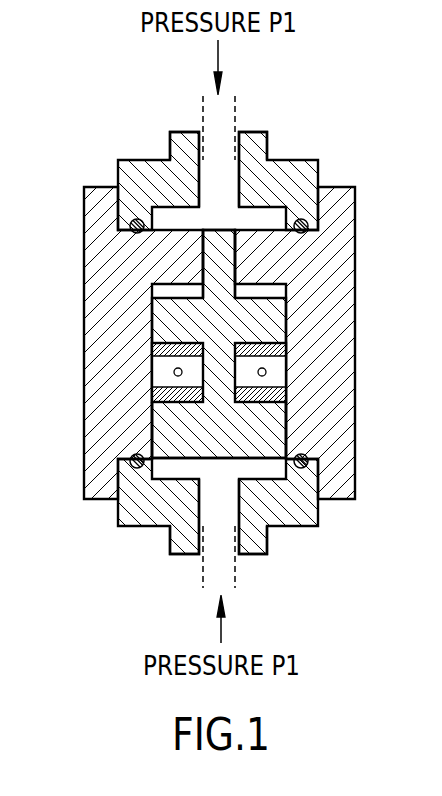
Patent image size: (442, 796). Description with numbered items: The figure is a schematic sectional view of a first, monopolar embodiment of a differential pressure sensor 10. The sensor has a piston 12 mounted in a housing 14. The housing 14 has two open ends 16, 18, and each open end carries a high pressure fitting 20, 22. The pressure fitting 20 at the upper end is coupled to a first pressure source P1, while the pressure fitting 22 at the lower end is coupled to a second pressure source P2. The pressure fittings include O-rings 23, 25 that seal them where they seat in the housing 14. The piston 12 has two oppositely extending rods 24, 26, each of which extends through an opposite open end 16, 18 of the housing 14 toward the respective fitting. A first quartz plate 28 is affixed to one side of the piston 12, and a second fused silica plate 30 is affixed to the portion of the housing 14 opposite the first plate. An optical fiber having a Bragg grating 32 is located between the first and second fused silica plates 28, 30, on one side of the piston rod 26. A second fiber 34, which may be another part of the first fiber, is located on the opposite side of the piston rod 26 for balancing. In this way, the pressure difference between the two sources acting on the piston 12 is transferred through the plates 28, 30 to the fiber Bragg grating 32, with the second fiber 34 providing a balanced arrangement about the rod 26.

The differential pressure sensor 10 is at (221, 398).
The piston 12 is at (221, 398).
The housing 14 is at (347, 320).
The open end 16 is at (221, 398).
The open end 18 is at (221, 398).
The high pressure fitting 20 is at (268, 165).
The high pressure fitting 22 is at (272, 522).
The O-ring 23 is at (306, 468).
The piston rod 24 is at (237, 254).
The O-ring 25 is at (307, 222).
The piston rod 26 is at (205, 435).
The first quartz plate 28 is at (155, 348).
The second fused silica plate 30 is at (152, 393).
The fiber Bragg grating 32 is at (266, 373).
The second fiber 34 is at (174, 371).